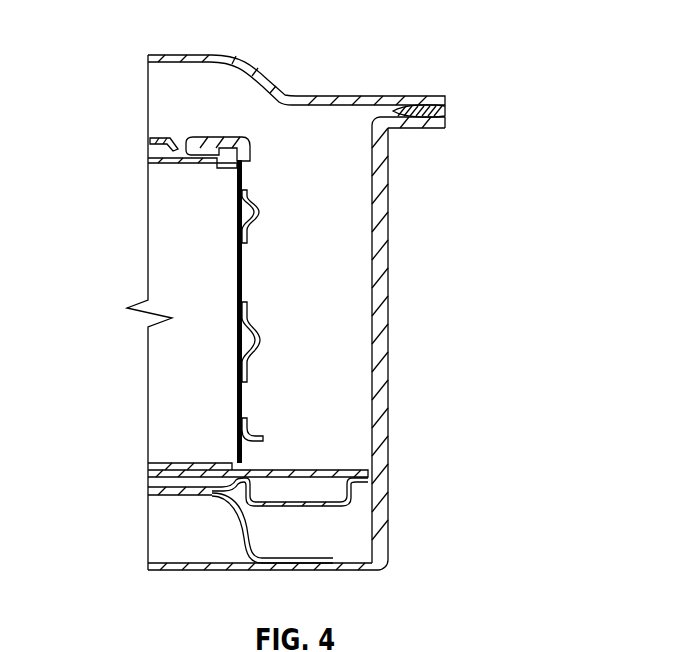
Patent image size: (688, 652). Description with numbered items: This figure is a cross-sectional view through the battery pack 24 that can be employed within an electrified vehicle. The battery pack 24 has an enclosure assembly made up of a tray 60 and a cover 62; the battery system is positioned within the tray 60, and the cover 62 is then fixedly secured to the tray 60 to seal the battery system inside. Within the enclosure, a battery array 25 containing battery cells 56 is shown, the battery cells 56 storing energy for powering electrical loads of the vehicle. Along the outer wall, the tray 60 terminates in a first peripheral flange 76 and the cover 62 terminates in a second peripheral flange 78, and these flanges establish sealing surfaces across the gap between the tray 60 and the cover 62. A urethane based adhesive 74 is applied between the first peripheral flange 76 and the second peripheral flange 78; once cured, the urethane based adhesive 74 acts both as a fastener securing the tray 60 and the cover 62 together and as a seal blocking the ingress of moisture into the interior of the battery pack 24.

The battery pack 24 is at (290, 60).
The battery array 25 is at (120, 127).
The battery cell 56 is at (202, 263).
The tray 60 is at (336, 571).
The cover 62 is at (204, 56).
The urethane based adhesive 74 is at (446, 112).
The first peripheral flange 76 is at (431, 127).
The second peripheral flange 78 is at (430, 100).